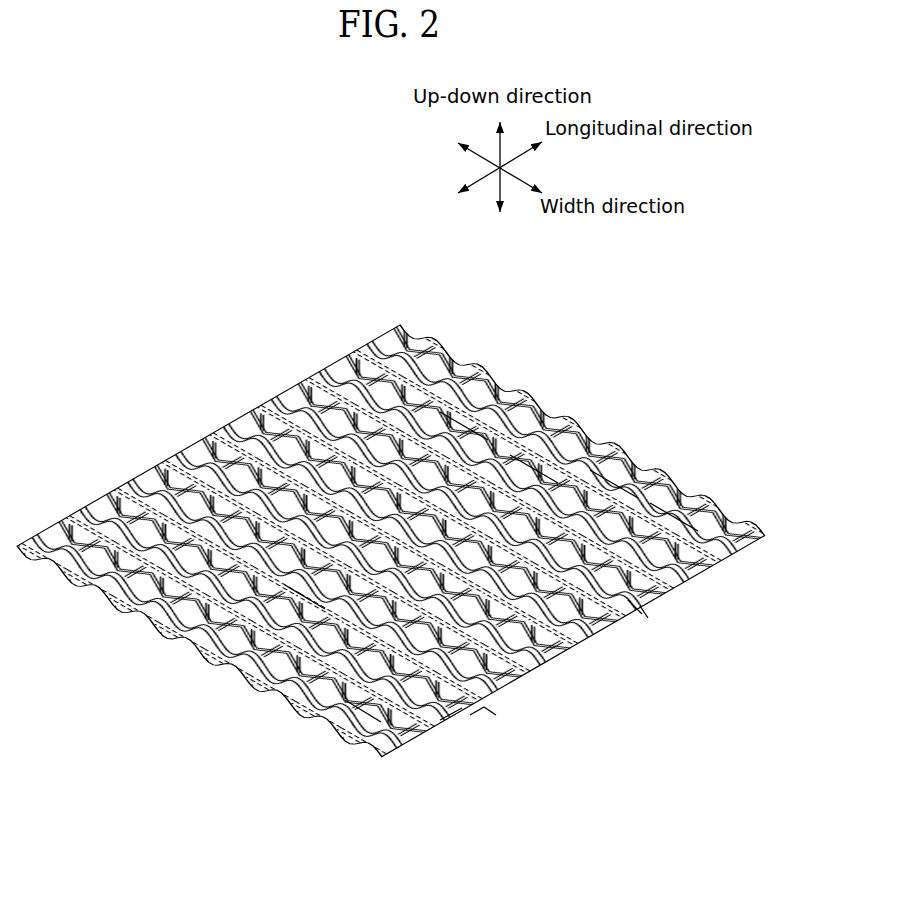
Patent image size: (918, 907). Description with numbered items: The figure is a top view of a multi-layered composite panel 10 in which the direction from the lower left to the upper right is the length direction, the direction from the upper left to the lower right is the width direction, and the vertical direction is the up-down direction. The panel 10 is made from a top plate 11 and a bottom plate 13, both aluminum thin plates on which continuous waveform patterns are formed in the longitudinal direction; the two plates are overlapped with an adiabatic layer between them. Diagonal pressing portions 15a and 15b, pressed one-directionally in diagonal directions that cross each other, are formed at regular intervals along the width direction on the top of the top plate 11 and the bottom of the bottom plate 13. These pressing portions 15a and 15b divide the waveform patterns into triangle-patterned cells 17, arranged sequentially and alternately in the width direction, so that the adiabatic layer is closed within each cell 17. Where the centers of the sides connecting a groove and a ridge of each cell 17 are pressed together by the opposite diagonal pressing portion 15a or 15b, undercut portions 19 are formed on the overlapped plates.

The multi-layered composite panel 10 is at (419, 310).
The top plate 11 is at (463, 713).
The bottom plate 13 is at (483, 713).
The diagonal pressing portion 15a is at (470, 428).
The diagonal pressing portion 15b is at (677, 520).
The triangle-patterned cell 17 is at (633, 612).
The undercut portion 19 is at (284, 586).